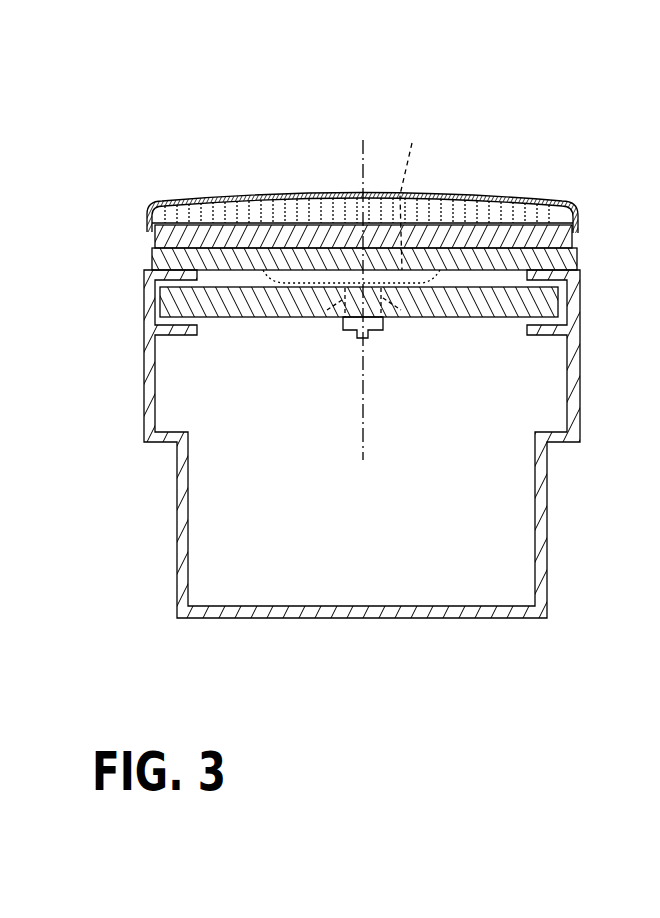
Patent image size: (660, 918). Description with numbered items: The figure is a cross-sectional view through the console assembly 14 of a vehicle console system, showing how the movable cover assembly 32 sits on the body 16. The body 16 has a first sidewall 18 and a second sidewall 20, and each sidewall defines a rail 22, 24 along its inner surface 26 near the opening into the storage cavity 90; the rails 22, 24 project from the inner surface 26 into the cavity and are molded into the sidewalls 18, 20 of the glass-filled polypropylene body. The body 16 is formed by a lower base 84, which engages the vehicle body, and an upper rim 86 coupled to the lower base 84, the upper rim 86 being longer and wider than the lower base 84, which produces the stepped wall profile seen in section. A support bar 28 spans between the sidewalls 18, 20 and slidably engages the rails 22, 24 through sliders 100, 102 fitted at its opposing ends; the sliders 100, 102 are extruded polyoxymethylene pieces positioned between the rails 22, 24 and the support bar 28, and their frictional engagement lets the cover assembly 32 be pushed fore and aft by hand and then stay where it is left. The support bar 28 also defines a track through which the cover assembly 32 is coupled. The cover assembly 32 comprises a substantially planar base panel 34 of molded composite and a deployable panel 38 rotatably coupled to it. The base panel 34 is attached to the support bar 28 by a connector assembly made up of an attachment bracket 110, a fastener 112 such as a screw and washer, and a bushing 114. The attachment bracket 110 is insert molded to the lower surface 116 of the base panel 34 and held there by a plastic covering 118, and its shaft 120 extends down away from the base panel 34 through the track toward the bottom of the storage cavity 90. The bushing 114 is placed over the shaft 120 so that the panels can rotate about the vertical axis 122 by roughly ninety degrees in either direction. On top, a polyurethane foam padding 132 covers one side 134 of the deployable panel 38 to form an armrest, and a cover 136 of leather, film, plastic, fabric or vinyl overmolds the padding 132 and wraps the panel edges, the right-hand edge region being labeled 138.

The console assembly 14 is at (568, 104).
The body 16 is at (506, 628).
The first sidewall 18 is at (177, 520).
The second sidewall 20 is at (548, 517).
The rail 22 is at (165, 337).
The rail 24 is at (568, 337).
The inner surface 26 is at (155, 400).
The support bar 28 is at (520, 270).
The cover assembly 32 is at (513, 187).
The base panel 34 is at (152, 258).
The deployable panel 38 is at (155, 235).
The lower base 84 is at (547, 600).
The upper rim 86 is at (620, 462).
The storage cavity 90 is at (310, 587).
The slider 100 is at (155, 305).
The slider 102 is at (562, 302).
The attachment bracket 110 is at (413, 193).
The fastener 112 is at (395, 450).
The bushing 114 is at (320, 315).
The lower surface 116 is at (237, 268).
The covering 118 is at (517, 327).
The shaft 120 is at (400, 320).
The vertical axis 122 is at (362, 142).
The padding 132 is at (248, 220).
The side 134 is at (448, 205).
The cover 136 is at (193, 202).
The lid right edge 138 is at (505, 296).